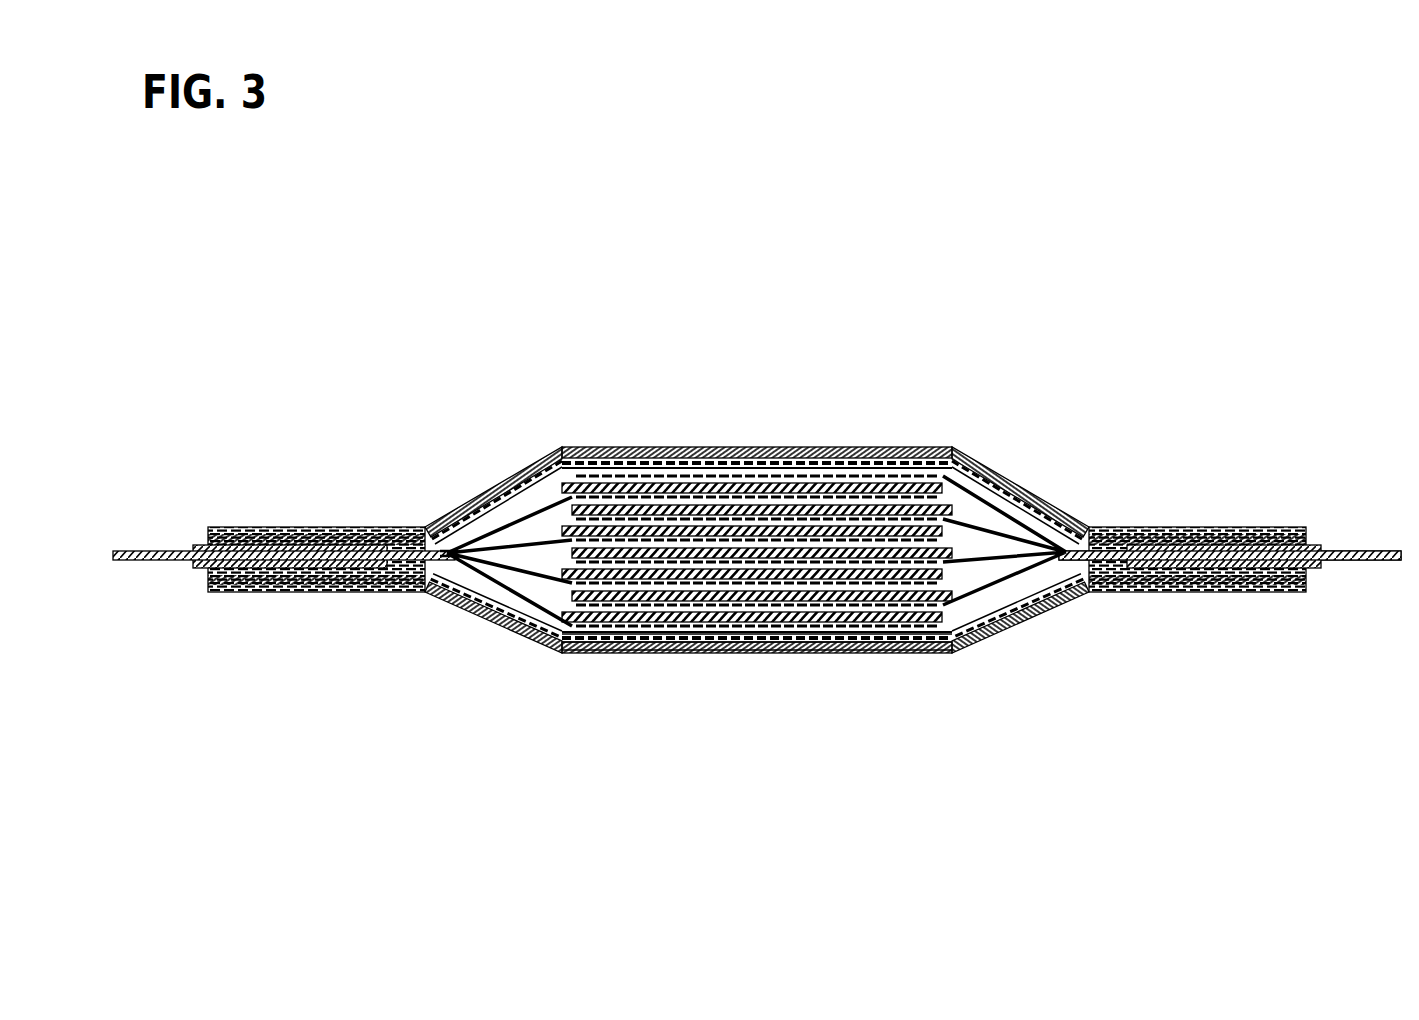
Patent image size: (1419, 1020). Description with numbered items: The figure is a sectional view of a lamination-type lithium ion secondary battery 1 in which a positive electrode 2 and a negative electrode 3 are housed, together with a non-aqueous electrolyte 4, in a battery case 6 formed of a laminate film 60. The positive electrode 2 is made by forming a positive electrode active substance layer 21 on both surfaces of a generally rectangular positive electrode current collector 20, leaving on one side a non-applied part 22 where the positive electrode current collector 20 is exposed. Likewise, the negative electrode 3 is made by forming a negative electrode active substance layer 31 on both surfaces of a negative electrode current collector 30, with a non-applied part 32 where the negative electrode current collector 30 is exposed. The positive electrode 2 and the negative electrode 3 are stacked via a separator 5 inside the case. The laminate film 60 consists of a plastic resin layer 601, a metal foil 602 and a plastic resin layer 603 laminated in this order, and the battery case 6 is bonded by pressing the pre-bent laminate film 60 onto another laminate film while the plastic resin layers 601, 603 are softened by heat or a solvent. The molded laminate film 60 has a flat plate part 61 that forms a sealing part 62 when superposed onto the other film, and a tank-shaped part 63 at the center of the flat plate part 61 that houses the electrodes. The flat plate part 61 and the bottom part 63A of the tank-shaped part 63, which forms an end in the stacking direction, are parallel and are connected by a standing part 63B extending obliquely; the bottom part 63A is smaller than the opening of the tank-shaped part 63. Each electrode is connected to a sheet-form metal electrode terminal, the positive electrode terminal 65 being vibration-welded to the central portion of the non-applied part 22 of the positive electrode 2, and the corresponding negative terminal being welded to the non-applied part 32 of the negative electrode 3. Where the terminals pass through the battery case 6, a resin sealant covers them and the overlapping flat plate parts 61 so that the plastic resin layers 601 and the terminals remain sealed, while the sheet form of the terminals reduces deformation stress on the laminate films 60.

The lithium ion secondary battery 1 is at (758, 522).
The positive electrode 2 is at (738, 714).
The positive electrode current collector 20 is at (757, 685).
The positive electrode active substance layer 21 is at (620, 652).
The non-applied part 22 is at (543, 645).
The negative electrode 3 is at (772, 455).
The negative electrode current collector 30 is at (830, 456).
The negative electrode active substance layer 31 is at (898, 458).
The non-applied part 32 is at (803, 343).
The non-aqueous electrolyte 4 is at (473, 573).
The separator 5 is at (733, 478).
The battery case 6 is at (1023, 612).
The laminate film 60 is at (766, 625).
The plastic resin layer 601 is at (832, 655).
The metal foil 602 is at (878, 655).
The plastic resin layer 603 is at (793, 747).
The flat plate part 61 is at (266, 545).
The sealing part 62 is at (1170, 545).
The tank-shaped part 63 is at (534, 456).
The bottom part 63A is at (500, 320).
The standing part 63B is at (522, 470).
The positive electrode terminal 65 is at (122, 562).